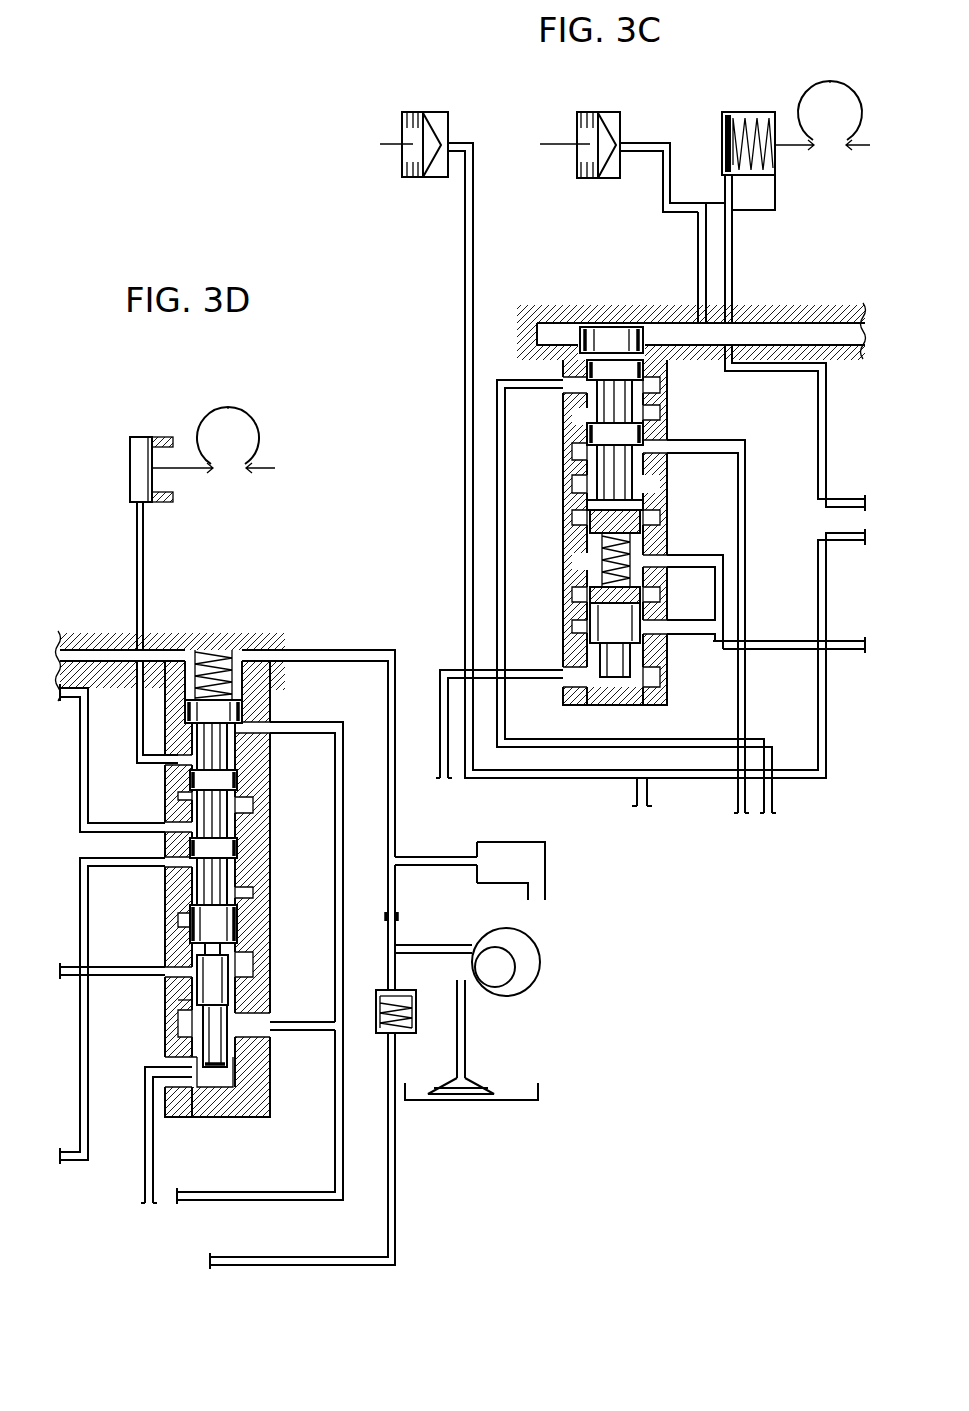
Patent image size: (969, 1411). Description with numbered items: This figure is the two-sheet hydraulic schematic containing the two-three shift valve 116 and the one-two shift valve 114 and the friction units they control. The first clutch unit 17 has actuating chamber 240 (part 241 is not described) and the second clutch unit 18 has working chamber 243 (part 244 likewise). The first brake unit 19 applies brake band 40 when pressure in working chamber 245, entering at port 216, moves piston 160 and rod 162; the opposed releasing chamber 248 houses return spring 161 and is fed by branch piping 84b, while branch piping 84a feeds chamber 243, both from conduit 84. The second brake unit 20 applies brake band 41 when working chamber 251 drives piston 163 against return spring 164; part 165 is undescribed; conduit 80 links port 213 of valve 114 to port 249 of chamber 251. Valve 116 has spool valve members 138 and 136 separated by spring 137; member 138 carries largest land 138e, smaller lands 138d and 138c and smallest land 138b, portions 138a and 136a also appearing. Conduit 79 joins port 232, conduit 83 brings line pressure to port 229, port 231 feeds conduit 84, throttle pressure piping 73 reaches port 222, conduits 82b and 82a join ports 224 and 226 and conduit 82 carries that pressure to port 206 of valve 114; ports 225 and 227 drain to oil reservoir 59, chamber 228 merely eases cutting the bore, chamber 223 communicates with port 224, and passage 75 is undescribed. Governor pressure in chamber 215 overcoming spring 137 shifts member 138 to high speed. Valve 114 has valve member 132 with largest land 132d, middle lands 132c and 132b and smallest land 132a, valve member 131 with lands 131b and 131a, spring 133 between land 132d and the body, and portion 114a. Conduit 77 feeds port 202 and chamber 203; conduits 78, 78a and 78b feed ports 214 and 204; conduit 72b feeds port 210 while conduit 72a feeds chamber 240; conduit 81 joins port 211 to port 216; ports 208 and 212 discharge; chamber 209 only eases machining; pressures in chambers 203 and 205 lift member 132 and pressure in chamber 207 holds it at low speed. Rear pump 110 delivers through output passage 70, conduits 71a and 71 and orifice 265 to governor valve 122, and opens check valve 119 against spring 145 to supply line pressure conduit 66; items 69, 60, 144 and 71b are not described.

In FIG. 3C, the first clutch unit 17 is at (438, 140).
In FIG. 3C, the actuating chamber 240 is at (444, 126).
In FIG. 3C, the valve element 241 is at (431, 180).
In FIG. 3C, the second clutch unit 18 is at (599, 128).
In FIG. 3C, the working chamber 243 is at (613, 113).
In FIG. 3C, the valve element 244 is at (612, 160).
In FIG. 3C, the port 216 is at (722, 182).
In FIG. 3C, the branch piping 84a is at (663, 207).
In FIG. 3C, the conduit 84 is at (698, 248).
In FIG. 3C, the piston 160 is at (754, 134).
In FIG. 3C, the return spring 161 is at (750, 120).
In FIG. 3C, the rod 162 is at (795, 143).
In FIG. 3C, the working chamber 245 is at (724, 130).
In FIG. 3C, the brake releasing chamber 248 is at (775, 175).
In FIG. 3C, the branch piping 84b is at (750, 205).
In FIG. 3C, the conduit 81 is at (732, 280).
In FIG. 3D, the conduit 81 is at (80, 745).
In FIG. 3C, the first brake unit 19 is at (826, 78).
In FIG. 3C, the brake band 40 is at (845, 92).
In FIG. 3C, the chamber 215 is at (665, 333).
In FIG. 3D, the chamber 215 is at (90, 655).
In FIG. 3C, the conduit 72a is at (465, 298).
In FIG. 3C, the conduit 72b is at (818, 605).
In FIG. 3D, the conduit 72b is at (80, 1105).
In FIG. 3C, the conduit 79 is at (497, 522).
In FIG. 3C, the throttle pressure conduit 73 is at (440, 722).
In FIG. 3C, the passage 75 is at (512, 678).
In FIG. 3C, the conduit 83 is at (745, 490).
In FIG. 3C, the conduit 82a is at (718, 578).
In FIG. 3C, the conduit 82b is at (690, 636).
In FIG. 3C, the conduit 82 is at (845, 652).
In FIG. 3D, the conduit 82 is at (65, 978).
In FIG. 3C, the 2-3 shift valve 116 is at (605, 479).
In FIG. 3C, the port 232 is at (572, 385).
In FIG. 3C, the chamber 228 is at (575, 485).
In FIG. 3C, the port 227 is at (572, 518).
In FIG. 3C, the port 225 is at (572, 595).
In FIG. 3C, the port 222 is at (573, 675).
In FIG. 3C, the port 231 is at (655, 415).
In FIG. 3C, the port 229 is at (660, 450).
In FIG. 3C, the port 226 is at (660, 561).
In FIG. 3C, the port 224 is at (660, 627).
In FIG. 3C, the chamber 223 is at (650, 690).
In FIG. 3C, the spool valve member 138 is at (617, 406).
In FIG. 3C, the largest land 138e is at (590, 325).
In FIG. 3C, the land 138d is at (630, 370).
In FIG. 3C, the land 138c is at (605, 433).
In FIG. 3C, the smallest land 138b is at (640, 503).
In FIG. 3C, the spool land 138a is at (640, 518).
In FIG. 3C, the spring 137 is at (635, 540).
In FIG. 3C, the spool valve member 136 is at (576, 662).
In FIG. 3C, the plug land 136a is at (605, 600).
In FIG. 3D, the second brake unit 20 is at (237, 403).
In FIG. 3D, the brake band 41 is at (260, 438).
In FIG. 3D, the working chamber 251 is at (164, 472).
In FIG. 3D, the piston 163 is at (155, 437).
In FIG. 3D, the return spring 164 is at (165, 503).
In FIG. 3D, the line 165 is at (203, 471).
In FIG. 3D, the port 249 is at (137, 500).
In FIG. 3D, the conduit 80 is at (143, 598).
In FIG. 3D, the passage 71b is at (345, 650).
In FIG. 3D, the conduit 71a is at (420, 857).
In FIG. 3D, the conduit 71 is at (388, 893).
In FIG. 3D, the orifice 265 is at (392, 913).
In FIG. 3D, the governor valve 122 is at (526, 820).
In FIG. 3D, the output passage 70 is at (425, 945).
In FIG. 3D, the rear pump 110 is at (600, 955).
In FIG. 3D, the intake passage 69 is at (468, 1040).
In FIG. 3D, the filter 60 is at (470, 1086).
In FIG. 3D, the oil reservoir 59 is at (515, 1100).
In FIG. 3D, the check valve 119 is at (413, 1052).
In FIG. 3D, the check valve ball 144 is at (405, 990).
In FIG. 3D, the spring 145 is at (384, 1040).
In FIG. 3D, the line pressure piping 66 is at (398, 1180).
In FIG. 3D, the conduit 78b is at (337, 860).
In FIG. 3D, the conduit 78a is at (290, 1030).
In FIG. 3D, the conduit 78 is at (343, 1118).
In FIG. 3D, the conduit 77 is at (145, 1158).
In FIG. 3D, the 1-2 shift valve 114 is at (210, 837).
In FIG. 3D, the spring 133 is at (210, 648).
In FIG. 3D, the port 213 is at (165, 760).
In FIG. 3D, the port 212 is at (178, 796).
In FIG. 3D, the port 211 is at (178, 827).
In FIG. 3D, the port 210 is at (178, 862).
In FIG. 3D, the port 208 is at (178, 920).
In FIG. 3D, the port 206 is at (178, 970).
In FIG. 3D, the chamber 205 is at (178, 1030).
In FIG. 3D, the port 202 is at (197, 1072).
In FIG. 3D, the chamber 203 is at (213, 1087).
In FIG. 3D, the port 214 is at (255, 728).
In FIG. 3D, the chamber 209 is at (240, 893).
In FIG. 3D, the chamber 207 is at (250, 962).
In FIG. 3D, the port 204 is at (240, 1028).
In FIG. 3D, the valve bore 114a is at (178, 1003).
In FIG. 3D, the valve member 132 is at (258, 810).
In FIG. 3D, the largest land 132d is at (245, 678).
In FIG. 3D, the land 132c is at (240, 780).
In FIG. 3D, the land 132b is at (240, 847).
In FIG. 3D, the smallest land 132a is at (230, 925).
In FIG. 3D, the valve member 131 is at (215, 1028).
In FIG. 3D, the land 131b is at (205, 988).
In FIG. 3D, the land 131a is at (225, 1065).